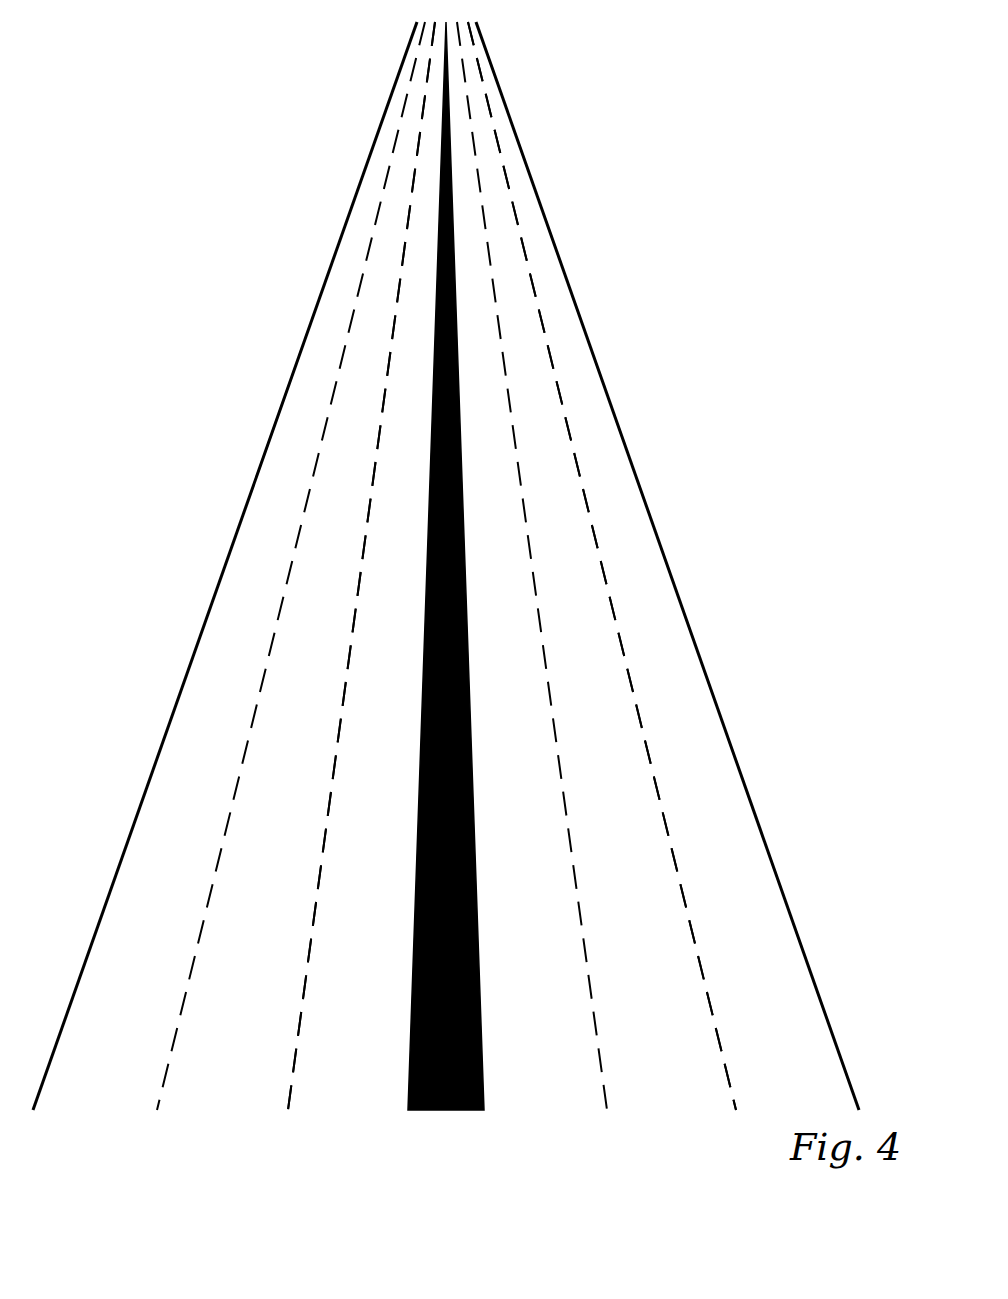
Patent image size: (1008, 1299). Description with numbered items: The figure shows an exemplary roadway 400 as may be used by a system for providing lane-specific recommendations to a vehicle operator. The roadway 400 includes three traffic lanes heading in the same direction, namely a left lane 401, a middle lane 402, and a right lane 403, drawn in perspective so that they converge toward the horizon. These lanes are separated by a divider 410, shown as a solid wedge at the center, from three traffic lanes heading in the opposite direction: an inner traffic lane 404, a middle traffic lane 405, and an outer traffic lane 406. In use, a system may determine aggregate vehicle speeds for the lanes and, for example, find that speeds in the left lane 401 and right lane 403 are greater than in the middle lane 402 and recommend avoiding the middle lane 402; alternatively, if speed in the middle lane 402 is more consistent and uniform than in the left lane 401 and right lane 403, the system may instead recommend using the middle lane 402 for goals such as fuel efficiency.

The roadway 400 is at (746, 125).
The left lane 401 is at (559, 1079).
The middle lane 402 is at (686, 1079).
The right lane 403 is at (798, 1079).
The inner traffic lane 404 is at (378, 990).
The middle traffic lane 405 is at (266, 990).
The outer traffic lane 406 is at (140, 990).
The divider 410 is at (482, 1149).